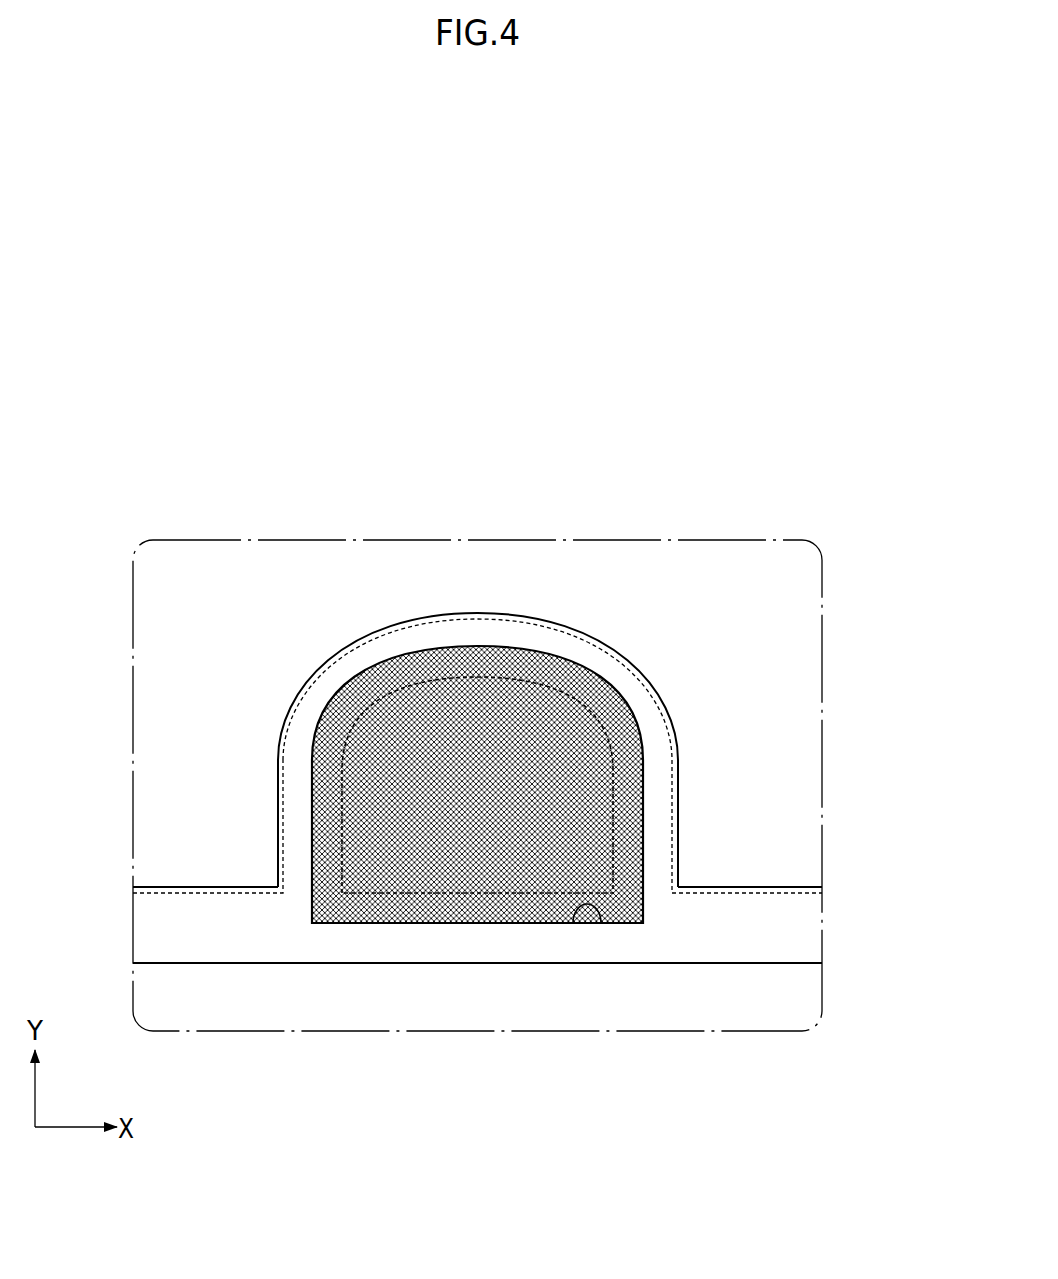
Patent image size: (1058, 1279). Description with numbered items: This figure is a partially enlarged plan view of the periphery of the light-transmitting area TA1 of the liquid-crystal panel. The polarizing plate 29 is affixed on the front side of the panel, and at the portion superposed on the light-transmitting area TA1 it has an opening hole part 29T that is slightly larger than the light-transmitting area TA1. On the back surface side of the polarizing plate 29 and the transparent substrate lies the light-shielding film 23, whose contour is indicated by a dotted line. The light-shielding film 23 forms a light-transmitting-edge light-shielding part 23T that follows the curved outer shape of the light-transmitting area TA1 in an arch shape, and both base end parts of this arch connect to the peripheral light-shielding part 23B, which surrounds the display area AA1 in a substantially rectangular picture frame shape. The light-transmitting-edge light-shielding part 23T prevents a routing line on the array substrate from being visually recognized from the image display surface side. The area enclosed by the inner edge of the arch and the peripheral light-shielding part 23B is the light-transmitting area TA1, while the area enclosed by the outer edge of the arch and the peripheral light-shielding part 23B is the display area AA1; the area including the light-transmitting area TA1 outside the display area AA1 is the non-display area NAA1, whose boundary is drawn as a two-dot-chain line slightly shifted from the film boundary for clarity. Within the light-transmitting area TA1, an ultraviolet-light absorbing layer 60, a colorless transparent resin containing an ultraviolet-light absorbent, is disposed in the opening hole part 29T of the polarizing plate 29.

The display area AA1 is at (584, 610).
The non-display area NAA1 is at (624, 692).
The light-shielding film 23 is at (539, 859).
The light-transmitting-edge light-shielding part 23T is at (664, 817).
The peripheral light-shielding part 23B is at (735, 905).
The ultraviolet-light absorbing layer 60 is at (405, 907).
The light-transmitting area TA1 is at (469, 870).
The opening hole part 29T is at (601, 924).
The polarizing plate 29 is at (700, 940).